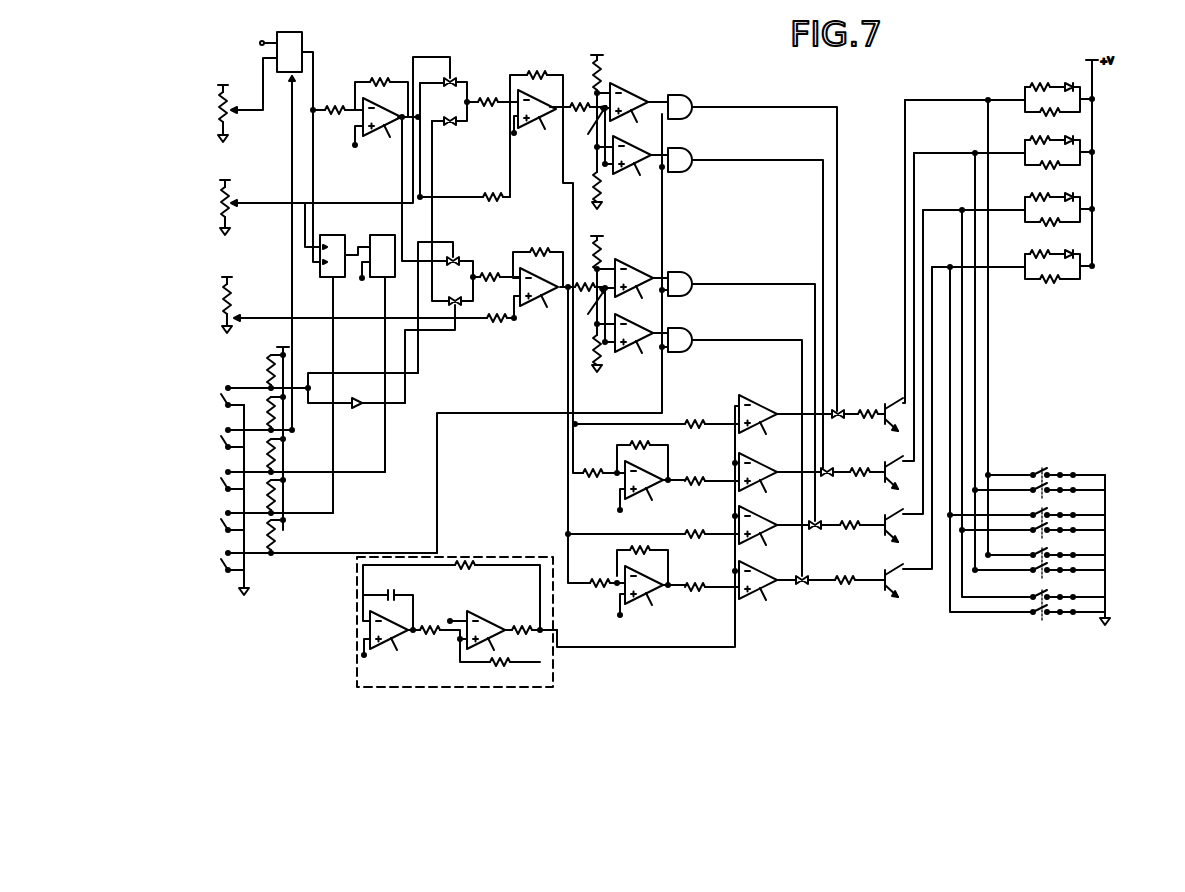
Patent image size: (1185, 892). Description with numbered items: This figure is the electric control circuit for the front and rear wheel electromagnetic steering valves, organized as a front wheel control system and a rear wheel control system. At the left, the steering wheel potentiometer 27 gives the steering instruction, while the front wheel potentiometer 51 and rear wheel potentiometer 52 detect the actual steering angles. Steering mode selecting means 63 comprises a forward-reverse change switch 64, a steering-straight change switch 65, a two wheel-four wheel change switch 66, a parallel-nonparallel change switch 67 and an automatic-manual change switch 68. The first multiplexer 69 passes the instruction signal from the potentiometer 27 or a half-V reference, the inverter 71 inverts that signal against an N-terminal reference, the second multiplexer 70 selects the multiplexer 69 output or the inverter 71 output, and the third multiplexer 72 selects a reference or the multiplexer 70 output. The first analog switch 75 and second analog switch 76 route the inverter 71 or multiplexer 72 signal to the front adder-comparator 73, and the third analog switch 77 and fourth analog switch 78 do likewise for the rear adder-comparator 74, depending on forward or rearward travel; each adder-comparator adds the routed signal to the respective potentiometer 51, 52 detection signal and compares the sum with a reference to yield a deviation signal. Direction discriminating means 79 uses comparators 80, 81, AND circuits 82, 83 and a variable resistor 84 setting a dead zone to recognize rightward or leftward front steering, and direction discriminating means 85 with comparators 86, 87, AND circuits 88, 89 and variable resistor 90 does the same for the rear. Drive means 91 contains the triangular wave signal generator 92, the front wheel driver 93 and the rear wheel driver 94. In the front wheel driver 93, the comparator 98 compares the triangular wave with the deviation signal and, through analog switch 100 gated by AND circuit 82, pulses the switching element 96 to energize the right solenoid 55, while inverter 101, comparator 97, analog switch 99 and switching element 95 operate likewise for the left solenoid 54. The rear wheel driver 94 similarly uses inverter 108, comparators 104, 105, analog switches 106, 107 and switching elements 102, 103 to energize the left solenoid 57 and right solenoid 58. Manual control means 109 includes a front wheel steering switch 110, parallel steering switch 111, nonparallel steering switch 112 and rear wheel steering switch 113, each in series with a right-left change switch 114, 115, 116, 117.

The steering wheel potentiometer 27 is at (222, 107).
The front wheel potentiometer 51 is at (222, 200).
The rear wheel potentiometer 52 is at (222, 315).
The left solenoid 54 is at (1060, 165).
The right solenoid 55 is at (1060, 112).
The left solenoid 57 is at (1065, 279).
The right solenoid 58 is at (1065, 222).
The steering mode selecting means 63 is at (276, 467).
The forward-reverse change switch 64 is at (222, 396).
The steering-straight change switch 65 is at (222, 438).
The two wheel-four wheel change switch 66 is at (222, 480).
The parallel-nonparallel change switch 67 is at (222, 521).
The automatic-manual change switch 68 is at (304, 567).
The first multiplexer 69 is at (303, 36).
The second multiplexer 70 is at (330, 235).
The inverter 71 is at (385, 125).
The third multiplexer 72 is at (382, 235).
The adder-comparator 73 is at (537, 115).
The adder-comparator 74 is at (536, 288).
The first analog switch 75 is at (452, 77).
The second analog switch 76 is at (452, 126).
The third analog switch 77 is at (455, 256).
The fourth analog switch 78 is at (457, 306).
The direction discriminating means 79 is at (702, 62).
The comparator 80 is at (636, 80).
The comparator 81 is at (640, 165).
The AND circuit 82 is at (688, 107).
The AND circuit 83 is at (690, 160).
The variable resistor 84 is at (588, 140).
The direction discriminating means 85 is at (712, 240).
The comparator 86 is at (642, 254).
The comparator 87 is at (641, 346).
The AND circuit 88 is at (690, 278).
The AND circuit 89 is at (690, 336).
The variable resistor 90 is at (588, 304).
The drive means 91 is at (523, 557).
The triangular wave signal generator 92 is at (457, 568).
The front wheel driver 93 is at (595, 459).
The rear wheel driver 94 is at (595, 557).
The switching element 95 is at (886, 462).
The switching element 96 is at (887, 405).
The comparator 97 is at (760, 480).
The comparator 98 is at (766, 405).
The analog switch 99 is at (828, 478).
The analog switch 100 is at (833, 420).
The inverter 101 is at (645, 494).
The switching element 102 is at (900, 585).
The switching element 103 is at (886, 530).
The comparator 104 is at (760, 590).
The comparator 105 is at (760, 533).
The analog switch 106 is at (803, 586).
The analog switch 107 is at (815, 531).
The inverter 108 is at (645, 598).
The manual control means 109 is at (1066, 362).
The front wheel steering switch 110 is at (1040, 470).
The parallel steering switch 111 is at (1040, 512).
The nonparallel steering switch 112 is at (1040, 552).
The rear wheel steering switch 113 is at (1040, 594).
The right-left change switch 114 is at (1068, 480).
The right-left change switch 115 is at (1063, 518).
The right-left change switch 116 is at (1063, 558).
The right-left change switch 117 is at (1063, 600).